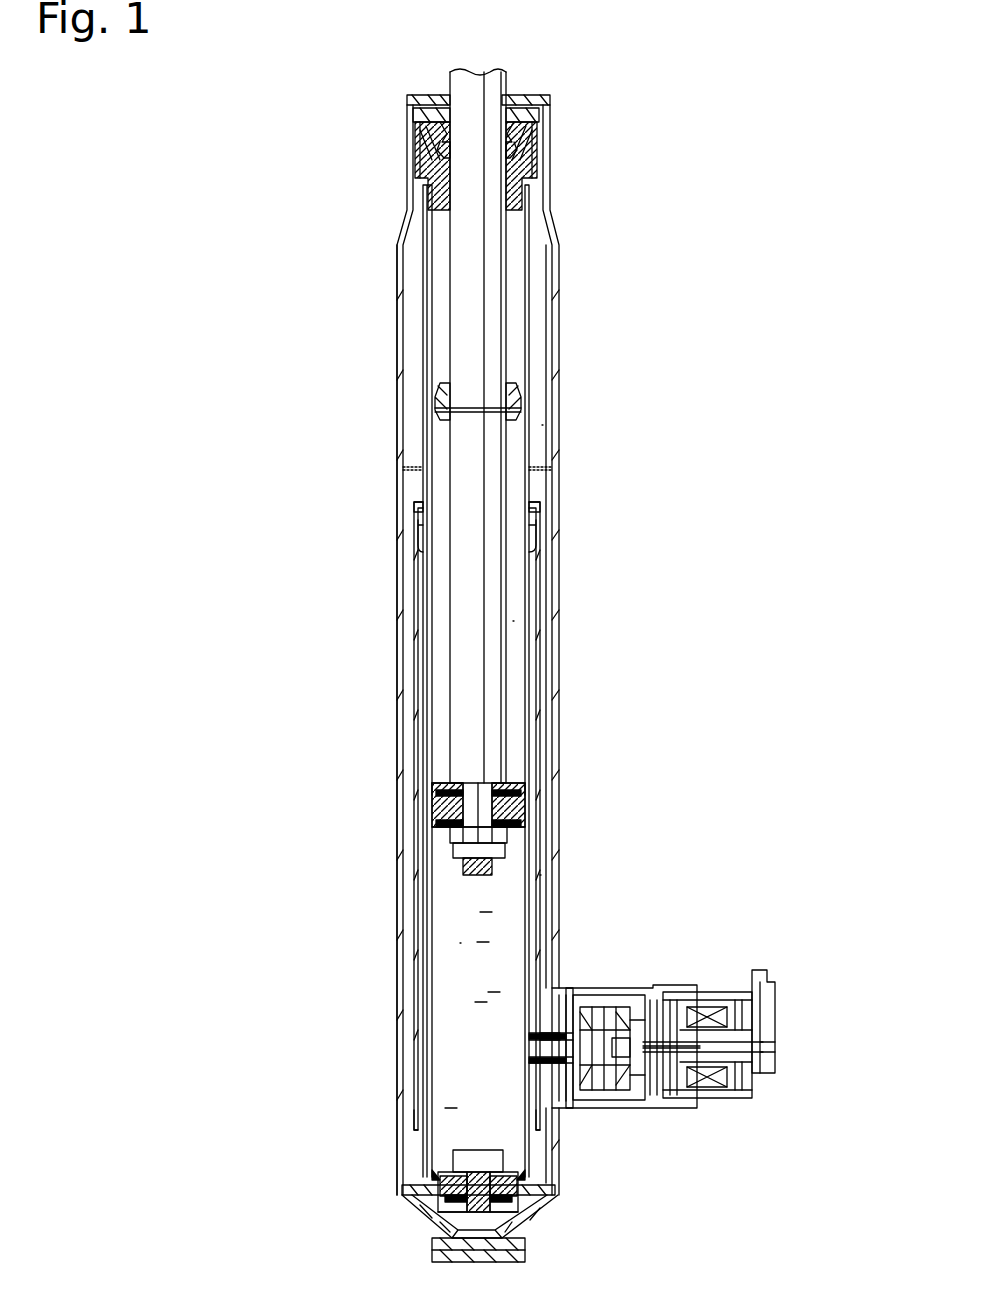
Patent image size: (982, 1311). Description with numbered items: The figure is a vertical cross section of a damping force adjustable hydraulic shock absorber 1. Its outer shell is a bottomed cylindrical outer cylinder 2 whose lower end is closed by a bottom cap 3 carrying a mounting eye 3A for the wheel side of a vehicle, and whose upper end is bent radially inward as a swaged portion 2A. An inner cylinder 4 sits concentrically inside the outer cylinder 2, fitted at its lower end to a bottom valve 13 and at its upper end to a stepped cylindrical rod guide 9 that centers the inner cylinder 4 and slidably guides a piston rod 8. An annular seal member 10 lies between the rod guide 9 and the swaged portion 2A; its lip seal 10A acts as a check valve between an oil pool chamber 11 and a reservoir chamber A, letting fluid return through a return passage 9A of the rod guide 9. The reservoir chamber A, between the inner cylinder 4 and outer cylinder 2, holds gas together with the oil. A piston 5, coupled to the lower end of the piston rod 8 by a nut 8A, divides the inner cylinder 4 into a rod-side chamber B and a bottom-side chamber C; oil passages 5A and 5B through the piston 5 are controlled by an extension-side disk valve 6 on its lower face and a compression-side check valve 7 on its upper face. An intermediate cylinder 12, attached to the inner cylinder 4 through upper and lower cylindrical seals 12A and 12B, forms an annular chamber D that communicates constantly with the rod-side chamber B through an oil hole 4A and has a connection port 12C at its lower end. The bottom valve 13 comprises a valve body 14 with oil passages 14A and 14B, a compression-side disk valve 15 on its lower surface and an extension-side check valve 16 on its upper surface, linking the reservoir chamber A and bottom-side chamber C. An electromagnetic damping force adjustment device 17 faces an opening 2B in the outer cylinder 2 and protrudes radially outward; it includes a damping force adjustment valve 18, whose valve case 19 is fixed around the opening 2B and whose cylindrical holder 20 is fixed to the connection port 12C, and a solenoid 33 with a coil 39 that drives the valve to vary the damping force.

The damping force adjustable hydraulic shock absorber 1 is at (385, 368).
The outer cylinder 2 is at (555, 295).
The swaged portion 2A is at (533, 97).
The opening 2B is at (560, 988).
The bottom cap 3 is at (520, 1225).
The mounting eye 3A is at (437, 1246).
The inner cylinder 4 is at (531, 355).
The oil hole 4A is at (423, 558).
The piston 5 is at (527, 820).
The oil passages 5A is at (528, 790).
The oil passages 5B is at (432, 820).
The disk valve 6 is at (527, 833).
The compression-side check valve 7 is at (438, 790).
The piston rod 8 is at (468, 620).
The nut 8A is at (452, 856).
The rod guide 9 is at (528, 182).
The return passage 9A is at (428, 165).
The seal member 10 is at (418, 116).
The lip seal 10A is at (520, 140).
The oil pool chamber 11 is at (527, 155).
The intermediate cylinder 12 is at (416, 700).
The upper cylindrical seal 12A is at (415, 508).
The lower cylindrical seal 12B is at (418, 1122).
The connection port 12C is at (538, 1040).
The bottom valve 13 is at (430, 1176).
The valve body 14 is at (548, 1210).
The oil passages 14A is at (438, 1188).
The oil passages 14B is at (540, 1190).
The compression-side disk valve 15 is at (438, 1196).
The extension-side check valve 16 is at (506, 1162).
The electromagnetic damping force adjustment device 17 is at (780, 975).
The damping force adjustment valve 18 is at (640, 988).
The valve case 19 is at (625, 1108).
The cylindrical holder 20 is at (537, 1060).
The solenoid 33 is at (710, 992).
The coil 39 is at (712, 1100).
The reservoir chamber A is at (542, 425).
The rod-side chamber B is at (513, 621).
The bottom-side chamber C is at (460, 943).
The annular chamber D is at (540, 875).